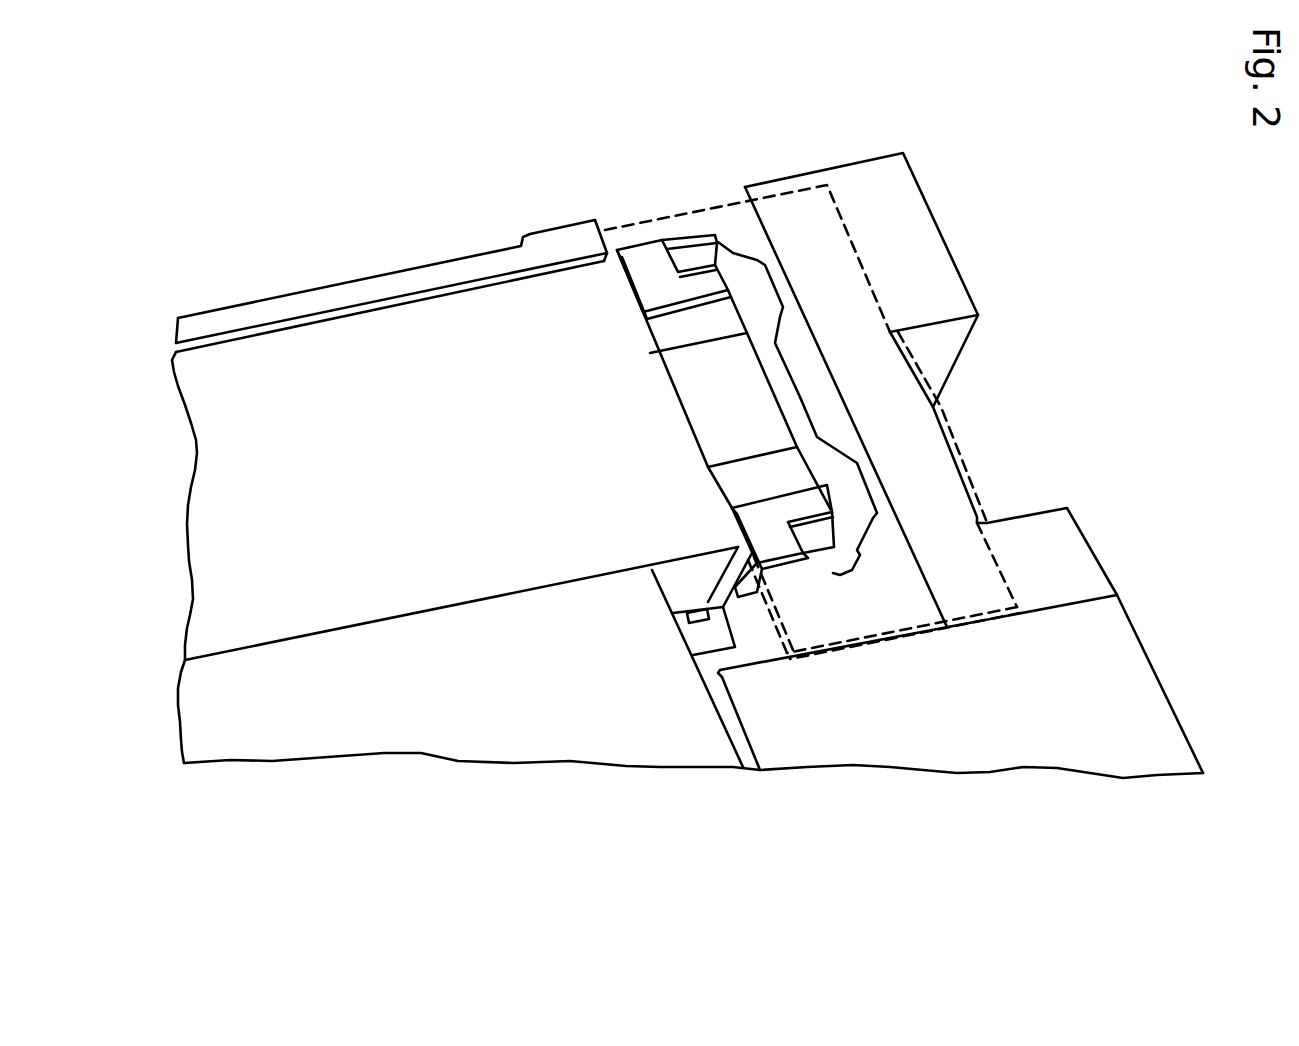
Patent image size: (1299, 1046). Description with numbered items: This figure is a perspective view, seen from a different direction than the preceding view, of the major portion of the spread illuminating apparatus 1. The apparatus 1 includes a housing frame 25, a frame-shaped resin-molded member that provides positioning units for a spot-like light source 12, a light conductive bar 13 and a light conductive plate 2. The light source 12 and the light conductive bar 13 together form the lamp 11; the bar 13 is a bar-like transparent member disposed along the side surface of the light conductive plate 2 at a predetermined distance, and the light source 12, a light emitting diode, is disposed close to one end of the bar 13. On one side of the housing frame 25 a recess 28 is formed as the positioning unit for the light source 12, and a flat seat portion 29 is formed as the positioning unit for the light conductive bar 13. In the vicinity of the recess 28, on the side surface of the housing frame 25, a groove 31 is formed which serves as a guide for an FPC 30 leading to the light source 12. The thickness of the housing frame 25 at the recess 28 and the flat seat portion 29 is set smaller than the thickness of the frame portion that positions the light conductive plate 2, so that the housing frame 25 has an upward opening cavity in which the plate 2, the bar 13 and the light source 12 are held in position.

The spread illuminating apparatus 1 is at (414, 213).
The light conductive plate 2 is at (537, 716).
The lamp 11 is at (539, 132).
The spot-like light source 12 is at (698, 380).
The light conductive bar 13 is at (558, 307).
The housing frame 25 is at (1110, 660).
The recess 28 is at (712, 232).
The flat seat portion 29 is at (347, 299).
The FPC 30 is at (950, 445).
The groove 31 is at (1004, 347).